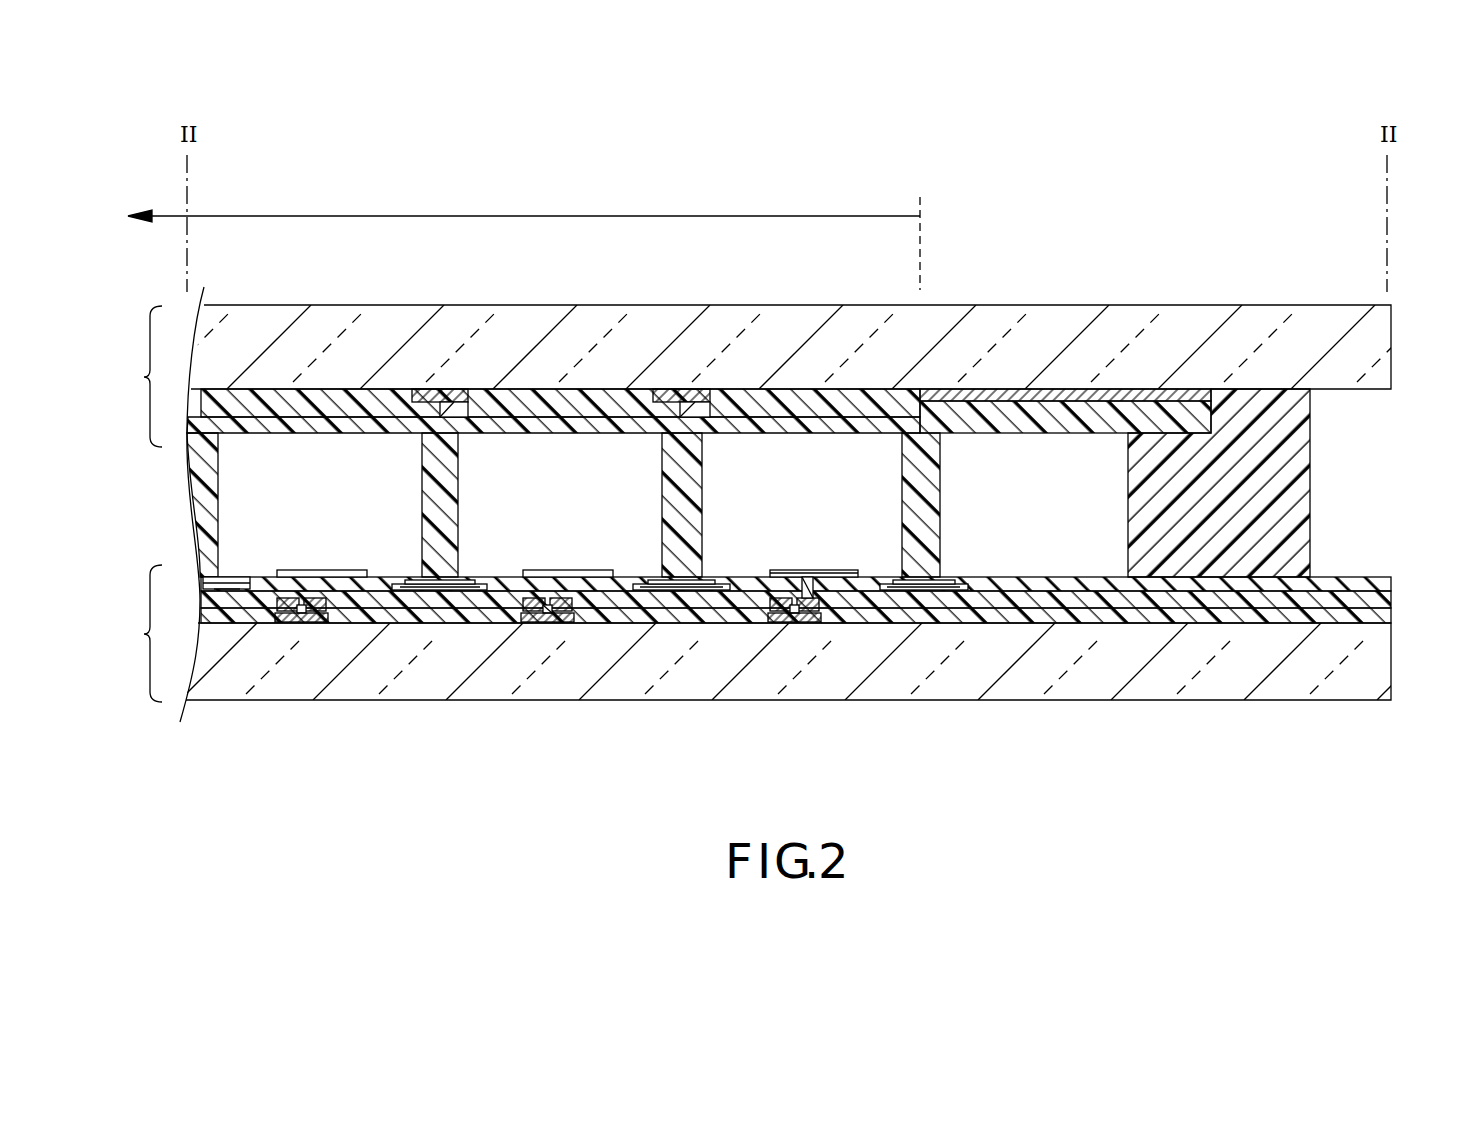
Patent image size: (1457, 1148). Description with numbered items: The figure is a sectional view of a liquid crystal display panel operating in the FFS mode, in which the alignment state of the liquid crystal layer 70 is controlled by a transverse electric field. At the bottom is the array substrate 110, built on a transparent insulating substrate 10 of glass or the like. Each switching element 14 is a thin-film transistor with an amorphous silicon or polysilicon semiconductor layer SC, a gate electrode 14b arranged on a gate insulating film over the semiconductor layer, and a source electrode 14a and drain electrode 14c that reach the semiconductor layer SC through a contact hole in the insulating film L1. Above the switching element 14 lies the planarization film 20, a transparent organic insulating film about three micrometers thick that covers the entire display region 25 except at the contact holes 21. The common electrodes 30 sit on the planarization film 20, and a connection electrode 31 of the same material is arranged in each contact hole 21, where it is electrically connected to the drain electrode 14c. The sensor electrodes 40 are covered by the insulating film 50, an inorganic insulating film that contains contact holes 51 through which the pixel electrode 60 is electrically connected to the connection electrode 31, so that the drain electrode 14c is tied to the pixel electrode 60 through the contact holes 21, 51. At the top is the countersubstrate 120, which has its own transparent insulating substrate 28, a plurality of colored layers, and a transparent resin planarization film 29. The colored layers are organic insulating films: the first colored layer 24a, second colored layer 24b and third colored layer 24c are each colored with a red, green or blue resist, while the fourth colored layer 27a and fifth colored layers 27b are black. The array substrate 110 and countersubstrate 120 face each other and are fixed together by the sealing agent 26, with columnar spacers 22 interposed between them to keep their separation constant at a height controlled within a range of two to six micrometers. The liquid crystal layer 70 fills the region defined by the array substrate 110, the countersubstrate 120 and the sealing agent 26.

The transparent insulating substrate 10 is at (1375, 663).
The switching element 14 is at (548, 705).
The source electrode 14a is at (530, 612).
The gate electrode 14b is at (561, 612).
The drain electrode 14c is at (575, 616).
The semiconductor layer SC is at (548, 614).
The planarization film 20 is at (1077, 600).
The contact hole 21 is at (824, 603).
The columnar spacer 22 is at (938, 513).
The first colored layer 24a is at (563, 402).
The second colored layer 24b is at (289, 402).
The third colored layer 24c is at (790, 402).
The display region 25 is at (524, 233).
The sealing agent 26 is at (1305, 454).
The fourth colored layer 27a is at (1033, 392).
The fifth colored layer 27b is at (432, 389).
The transparent insulating substrate 28 is at (1375, 354).
The transparent resin planarization film 29 is at (342, 433).
The common electrode 30 is at (636, 580).
The connection electrode 31 is at (810, 600).
The sensor electrode 40 is at (713, 580).
The insulating film 50 is at (1375, 584).
The contact hole 51 is at (803, 580).
The pixel electrode 60 is at (838, 570).
The liquid crystal layer 70 is at (252, 545).
The array substrate 110 is at (133, 633).
The countersubstrate 120 is at (133, 376).
The insulating film L1 is at (1375, 614).